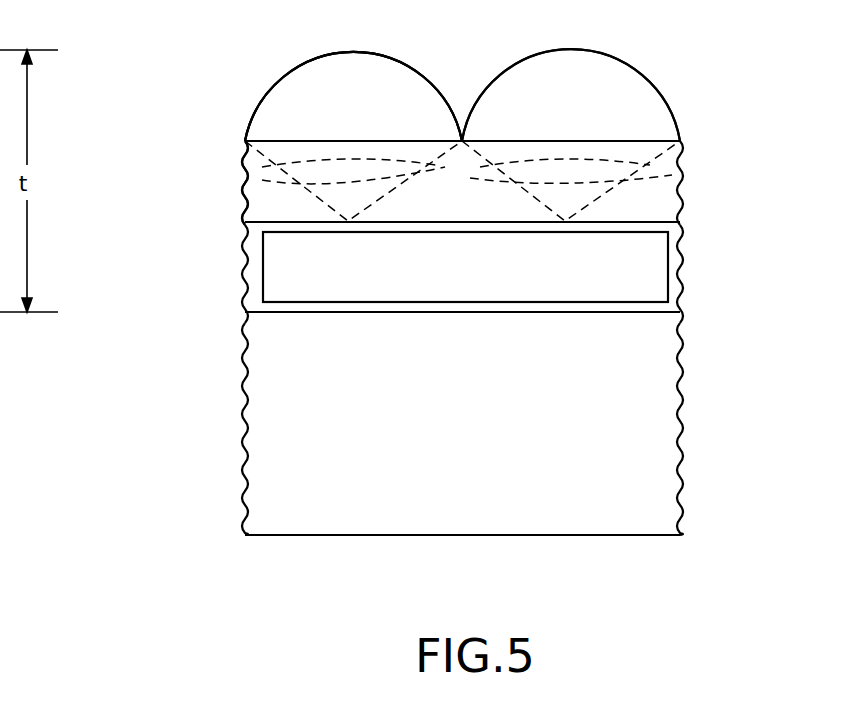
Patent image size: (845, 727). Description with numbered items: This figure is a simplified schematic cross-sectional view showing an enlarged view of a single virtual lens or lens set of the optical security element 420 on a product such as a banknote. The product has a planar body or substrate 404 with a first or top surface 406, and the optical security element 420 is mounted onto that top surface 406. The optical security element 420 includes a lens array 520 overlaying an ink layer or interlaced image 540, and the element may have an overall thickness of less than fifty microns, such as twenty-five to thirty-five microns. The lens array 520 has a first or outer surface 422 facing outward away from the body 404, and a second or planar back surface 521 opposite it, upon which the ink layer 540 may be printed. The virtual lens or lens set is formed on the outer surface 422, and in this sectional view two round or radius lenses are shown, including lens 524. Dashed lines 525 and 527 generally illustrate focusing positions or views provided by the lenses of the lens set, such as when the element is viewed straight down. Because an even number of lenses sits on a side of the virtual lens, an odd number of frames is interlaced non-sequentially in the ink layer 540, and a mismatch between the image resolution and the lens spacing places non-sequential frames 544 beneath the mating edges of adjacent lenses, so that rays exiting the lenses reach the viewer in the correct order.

The optical security element 420 is at (770, 23).
The lens 524 is at (317, 59).
The lens array 520 is at (666, 80).
The first or outer surface of the lens array 422 is at (243, 100).
The dashed lines illustrating focusing position 525 is at (575, 50).
The dashed lines illustrating focusing position 527 is at (695, 166).
The second or planar back surface of the lens array 521 is at (248, 228).
The ink layer or interlaced image 540 is at (232, 254).
The non-sequential frames 544 is at (392, 313).
The first or top surface 406 is at (676, 303).
The planar body or substrate 404 is at (580, 546).